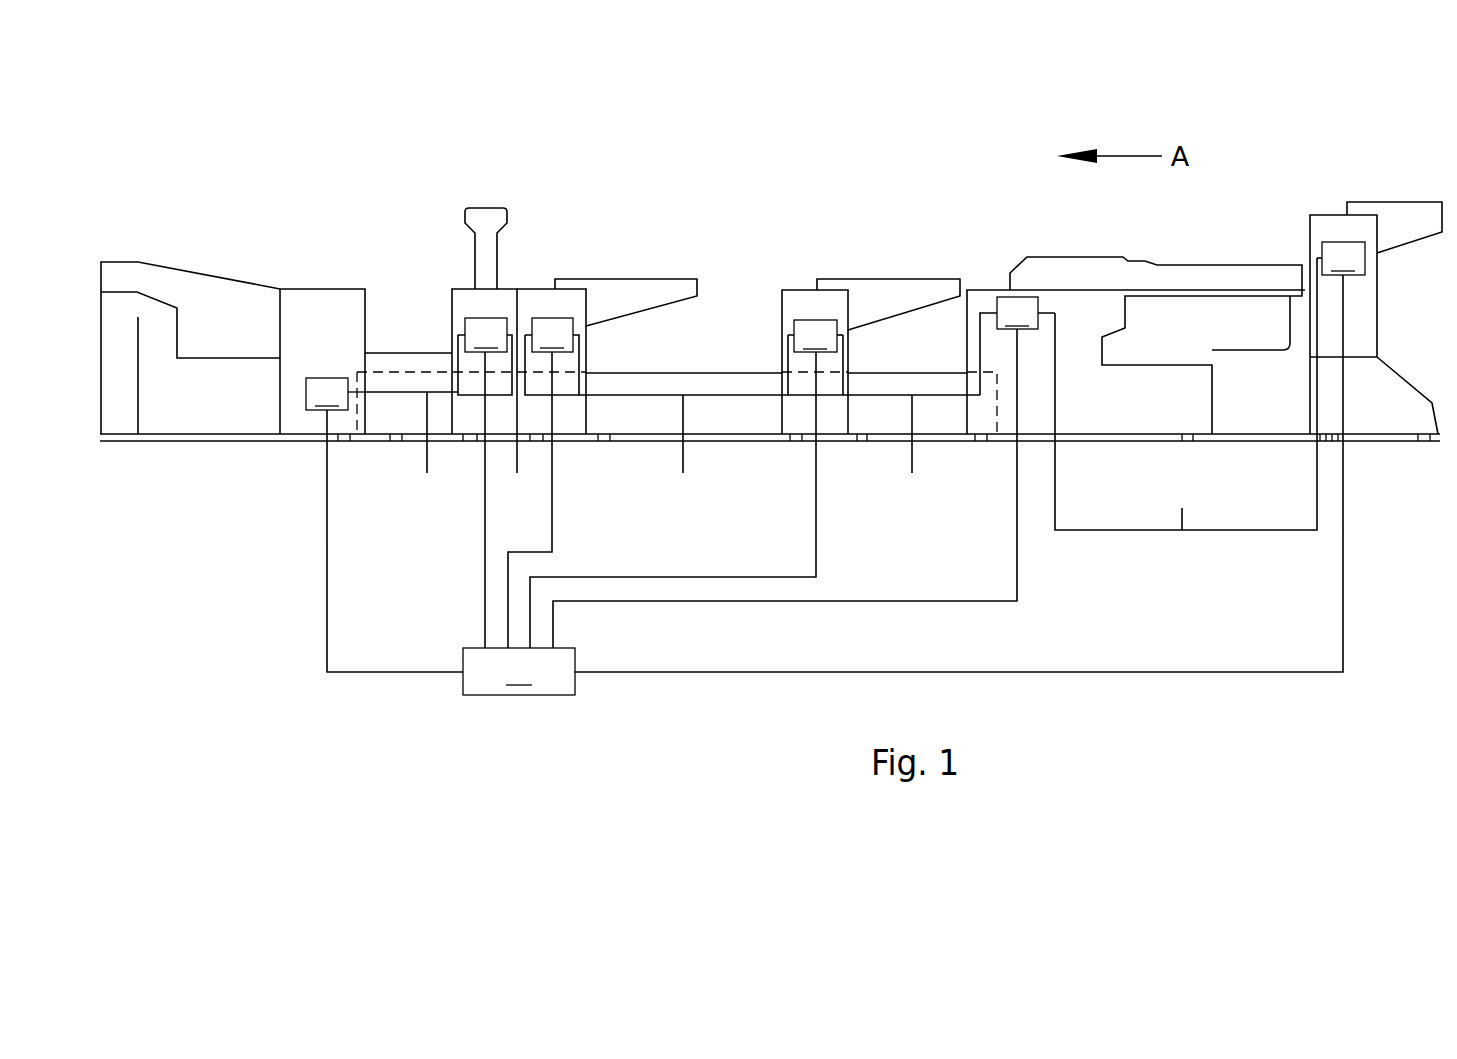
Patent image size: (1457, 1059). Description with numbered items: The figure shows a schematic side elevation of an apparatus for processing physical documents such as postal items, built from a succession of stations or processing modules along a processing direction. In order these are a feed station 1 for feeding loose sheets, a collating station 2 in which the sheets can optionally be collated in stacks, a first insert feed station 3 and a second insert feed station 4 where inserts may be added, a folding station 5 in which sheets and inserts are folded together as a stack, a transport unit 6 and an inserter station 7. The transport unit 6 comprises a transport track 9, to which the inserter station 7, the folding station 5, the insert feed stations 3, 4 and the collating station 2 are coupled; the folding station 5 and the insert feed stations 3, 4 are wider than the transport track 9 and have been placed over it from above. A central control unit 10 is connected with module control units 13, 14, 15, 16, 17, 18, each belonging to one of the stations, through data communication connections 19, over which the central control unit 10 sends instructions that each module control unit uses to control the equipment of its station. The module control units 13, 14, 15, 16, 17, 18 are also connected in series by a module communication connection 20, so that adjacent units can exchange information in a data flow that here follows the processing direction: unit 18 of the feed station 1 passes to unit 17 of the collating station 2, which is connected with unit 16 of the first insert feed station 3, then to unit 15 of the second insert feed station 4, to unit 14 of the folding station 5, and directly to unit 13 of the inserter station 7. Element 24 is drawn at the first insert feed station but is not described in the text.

The feed station 1 is at (1322, 215).
The collating station 2 is at (1175, 262).
The first insert feed station 3 is at (800, 290).
The second insert feed station 4 is at (538, 289).
The folding station 5 is at (512, 289).
The transport unit 6 is at (398, 353).
The inserter station 7 is at (203, 273).
The transport track 9 is at (378, 372).
The central control unit 10 is at (519, 671).
The module control unit 13 is at (335, 394).
The module control unit 14 is at (486, 335).
The module control unit 15 is at (552, 335).
The module control unit 16 is at (815, 336).
The module control unit 17 is at (1017, 346).
The module control unit 18 is at (1341, 258).
The data communication connection 19 is at (327, 600).
The module communication connection 20 is at (802, 461).
The sensor 24 is at (840, 333).